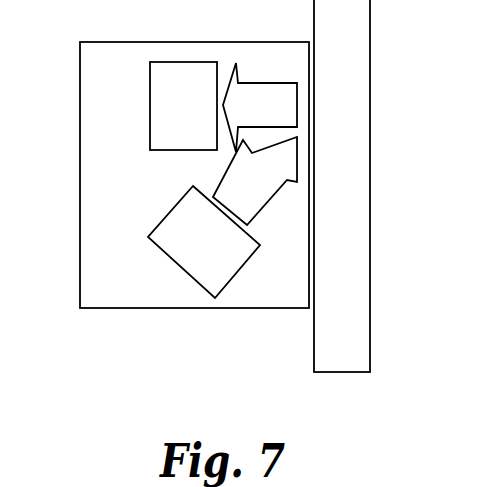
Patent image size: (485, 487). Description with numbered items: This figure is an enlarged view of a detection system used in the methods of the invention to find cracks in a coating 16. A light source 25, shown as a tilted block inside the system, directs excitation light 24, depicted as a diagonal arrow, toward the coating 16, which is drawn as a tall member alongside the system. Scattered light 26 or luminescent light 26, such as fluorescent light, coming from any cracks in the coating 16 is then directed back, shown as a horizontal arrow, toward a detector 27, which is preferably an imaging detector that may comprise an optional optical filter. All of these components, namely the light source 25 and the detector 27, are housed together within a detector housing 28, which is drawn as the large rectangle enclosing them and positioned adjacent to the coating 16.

The coating 16 is at (371, 23).
The excitation light 24 is at (283, 172).
The light source 25 is at (193, 280).
The scattered light or luminescent light 26 is at (273, 120).
The detector 27 is at (182, 62).
The detector housing 28 is at (80, 157).